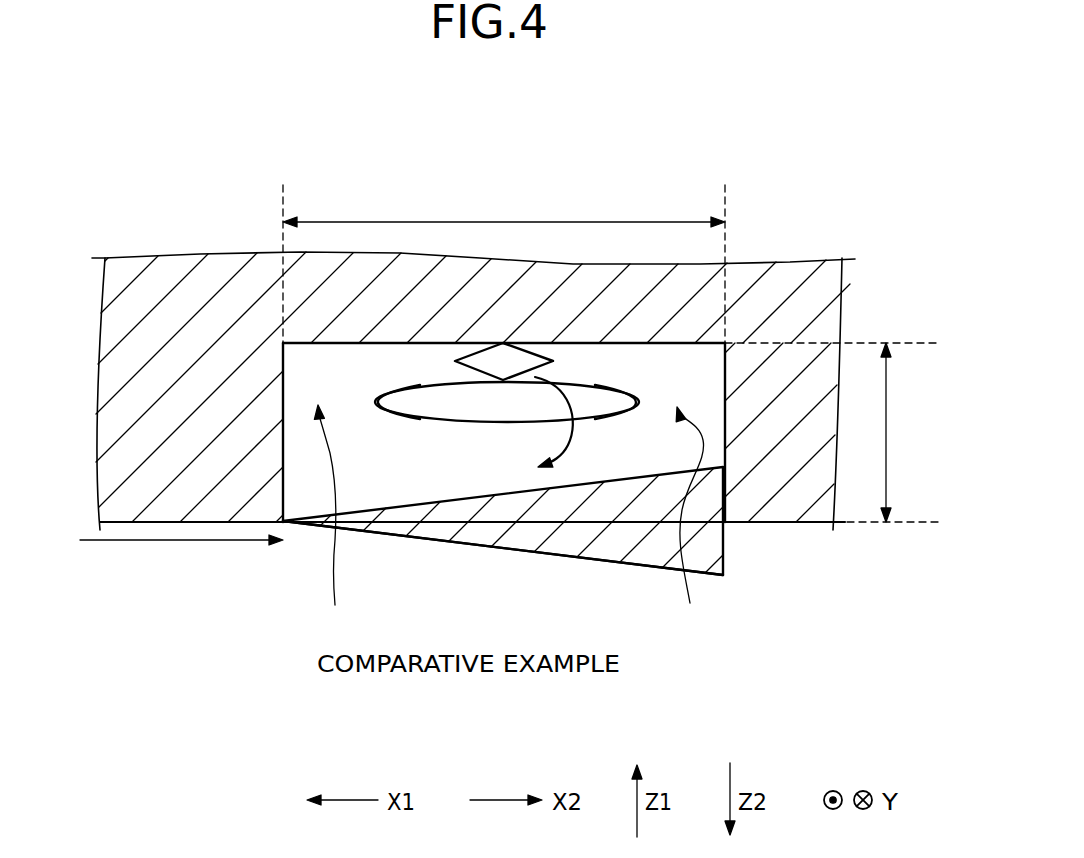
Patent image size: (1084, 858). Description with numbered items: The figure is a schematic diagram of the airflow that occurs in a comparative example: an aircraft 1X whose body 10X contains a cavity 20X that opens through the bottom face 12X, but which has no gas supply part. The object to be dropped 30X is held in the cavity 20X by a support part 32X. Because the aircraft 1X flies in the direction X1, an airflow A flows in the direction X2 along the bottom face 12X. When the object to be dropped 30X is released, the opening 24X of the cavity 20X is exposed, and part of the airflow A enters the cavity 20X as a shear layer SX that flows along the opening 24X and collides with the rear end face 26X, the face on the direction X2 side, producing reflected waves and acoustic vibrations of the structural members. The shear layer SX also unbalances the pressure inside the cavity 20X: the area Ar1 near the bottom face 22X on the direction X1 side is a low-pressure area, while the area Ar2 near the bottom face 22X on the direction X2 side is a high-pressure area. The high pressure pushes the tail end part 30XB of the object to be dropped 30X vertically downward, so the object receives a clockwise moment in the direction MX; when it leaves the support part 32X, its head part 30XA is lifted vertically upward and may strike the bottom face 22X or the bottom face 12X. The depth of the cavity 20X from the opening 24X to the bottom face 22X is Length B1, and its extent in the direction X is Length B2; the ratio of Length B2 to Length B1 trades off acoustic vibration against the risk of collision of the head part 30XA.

The aircraft 1X is at (870, 188).
The body 10X is at (782, 292).
The bottom face 12X is at (170, 522).
The cavity 20X is at (572, 450).
The bottom face of the cavity 22X is at (702, 345).
The opening 24X is at (395, 526).
The rear end face 26X is at (727, 522).
The object to be dropped 30X is at (585, 397).
The head part 30XA is at (375, 401).
The tail end part 30XB is at (637, 397).
The support part 32X is at (503, 362).
The shear layer SX is at (625, 562).
The direction of moment MX is at (574, 422).
The area Ar1 is at (331, 521).
The area Ar2 is at (690, 522).
The airflow A is at (172, 545).
The Length B1 is at (832, 432).
The Length B2 is at (504, 264).